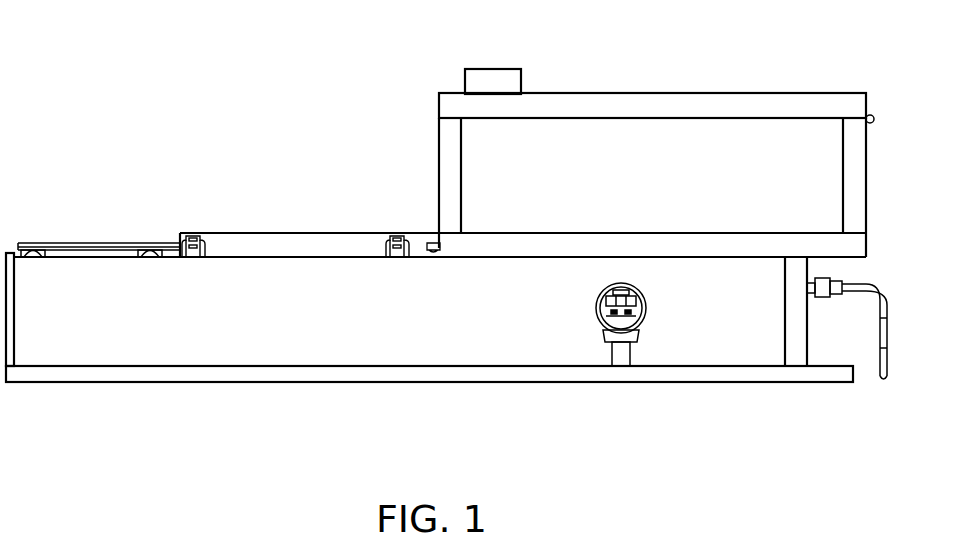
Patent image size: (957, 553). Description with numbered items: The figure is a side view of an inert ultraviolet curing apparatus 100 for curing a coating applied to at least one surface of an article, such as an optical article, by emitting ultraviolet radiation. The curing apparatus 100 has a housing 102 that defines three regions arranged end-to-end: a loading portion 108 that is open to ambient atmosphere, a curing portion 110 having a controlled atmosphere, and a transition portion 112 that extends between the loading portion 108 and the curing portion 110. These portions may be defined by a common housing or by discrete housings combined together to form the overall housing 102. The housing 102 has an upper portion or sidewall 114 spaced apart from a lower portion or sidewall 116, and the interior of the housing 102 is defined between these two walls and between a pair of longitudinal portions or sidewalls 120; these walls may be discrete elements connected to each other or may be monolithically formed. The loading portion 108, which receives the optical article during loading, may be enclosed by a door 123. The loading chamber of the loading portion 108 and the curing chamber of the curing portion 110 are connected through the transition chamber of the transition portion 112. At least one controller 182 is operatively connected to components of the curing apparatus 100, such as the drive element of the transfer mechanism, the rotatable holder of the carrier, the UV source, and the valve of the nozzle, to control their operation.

The curing apparatus 100 is at (276, 94).
The housing 102 is at (422, 178).
The loading portion 108 is at (157, 348).
The curing portion 110 is at (739, 348).
The transition portion 112 is at (459, 348).
The upper portion or sidewall 114 is at (279, 233).
The lower portion or sidewall 116 is at (293, 372).
The longitudinal portion or sidewall 120 is at (674, 145).
The door 123 is at (42, 243).
The controller 182 is at (497, 77).